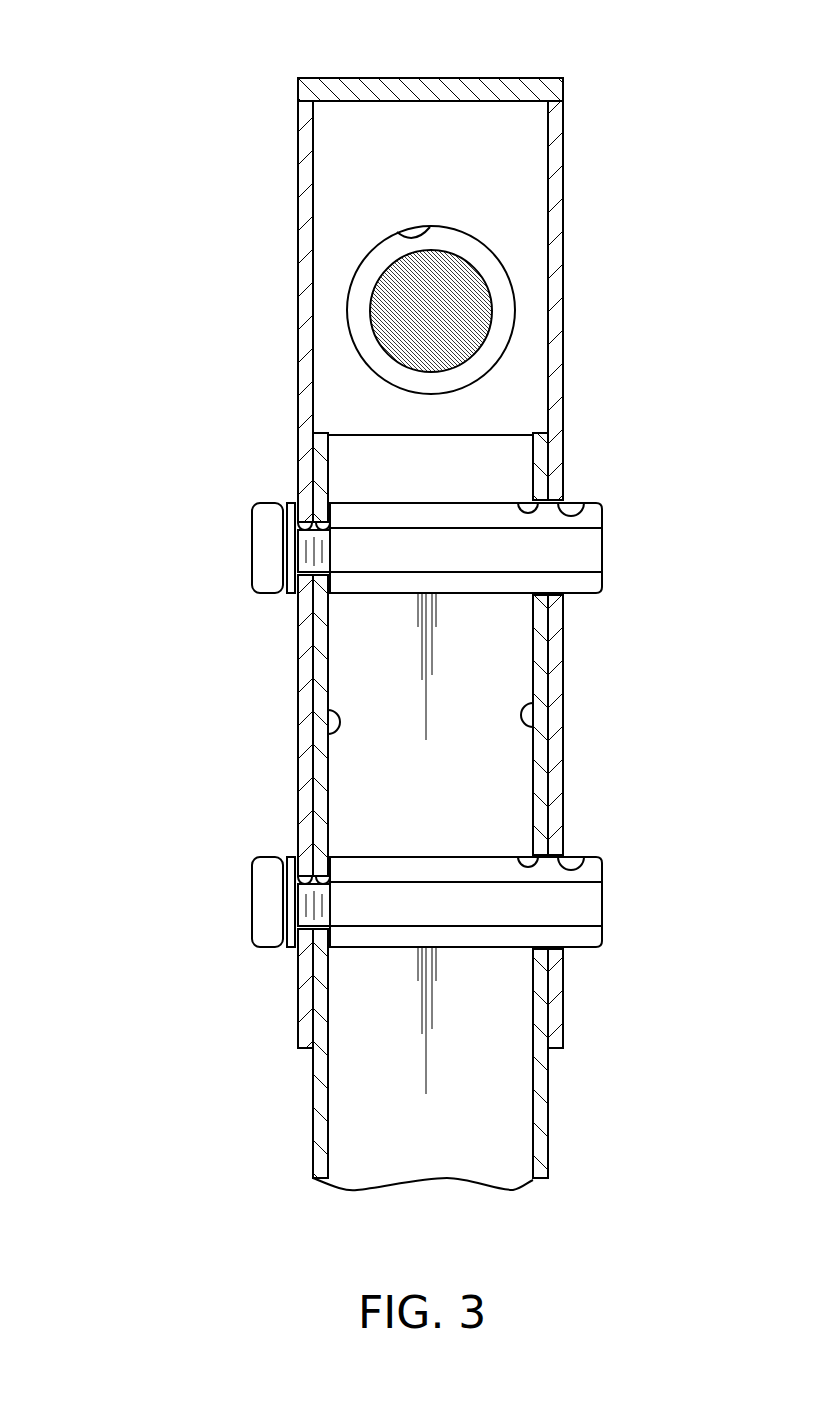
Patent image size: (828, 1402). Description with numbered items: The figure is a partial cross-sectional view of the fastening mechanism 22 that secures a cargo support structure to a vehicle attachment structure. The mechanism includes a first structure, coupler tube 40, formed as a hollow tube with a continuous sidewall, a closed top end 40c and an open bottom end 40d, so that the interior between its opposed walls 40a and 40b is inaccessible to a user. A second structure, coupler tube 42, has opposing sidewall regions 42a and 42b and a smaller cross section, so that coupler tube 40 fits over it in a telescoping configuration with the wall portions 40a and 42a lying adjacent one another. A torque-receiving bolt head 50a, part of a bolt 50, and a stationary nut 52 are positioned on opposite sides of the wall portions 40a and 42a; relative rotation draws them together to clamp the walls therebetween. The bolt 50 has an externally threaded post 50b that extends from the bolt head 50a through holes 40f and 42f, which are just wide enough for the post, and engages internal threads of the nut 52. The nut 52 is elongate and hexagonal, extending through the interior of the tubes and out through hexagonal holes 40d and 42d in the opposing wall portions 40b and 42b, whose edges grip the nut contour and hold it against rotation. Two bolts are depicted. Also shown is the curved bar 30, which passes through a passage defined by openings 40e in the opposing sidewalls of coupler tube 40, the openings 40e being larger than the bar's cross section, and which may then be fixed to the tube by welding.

The fastening mechanism 22 is at (181, 350).
The bar 30 is at (470, 305).
The coupler tube 40 is at (567, 178).
The opposed wall of coupler tube 40 40a is at (307, 690).
The opposed wall of coupler tube 40 40b is at (557, 672).
The closed top end 40c is at (423, 78).
The hole in opposing wall portion 40b 40d is at (582, 500).
The openings 40e is at (400, 232).
The hole in sidewall 40a 40f is at (283, 527).
The coupler tube 42 is at (313, 1098).
The sidewall region of coupler tube 42 42a is at (338, 732).
The opposing sidewall region of coupler tube 42 42b is at (525, 727).
The hole in opposing wall portion 42b 42d is at (522, 503).
The hole in sidewall region 42a 42f is at (330, 527).
The bolt 50 is at (247, 520).
The bolt head 50a is at (256, 566).
The externally threaded post 50b is at (322, 550).
The nut 52 is at (450, 595).